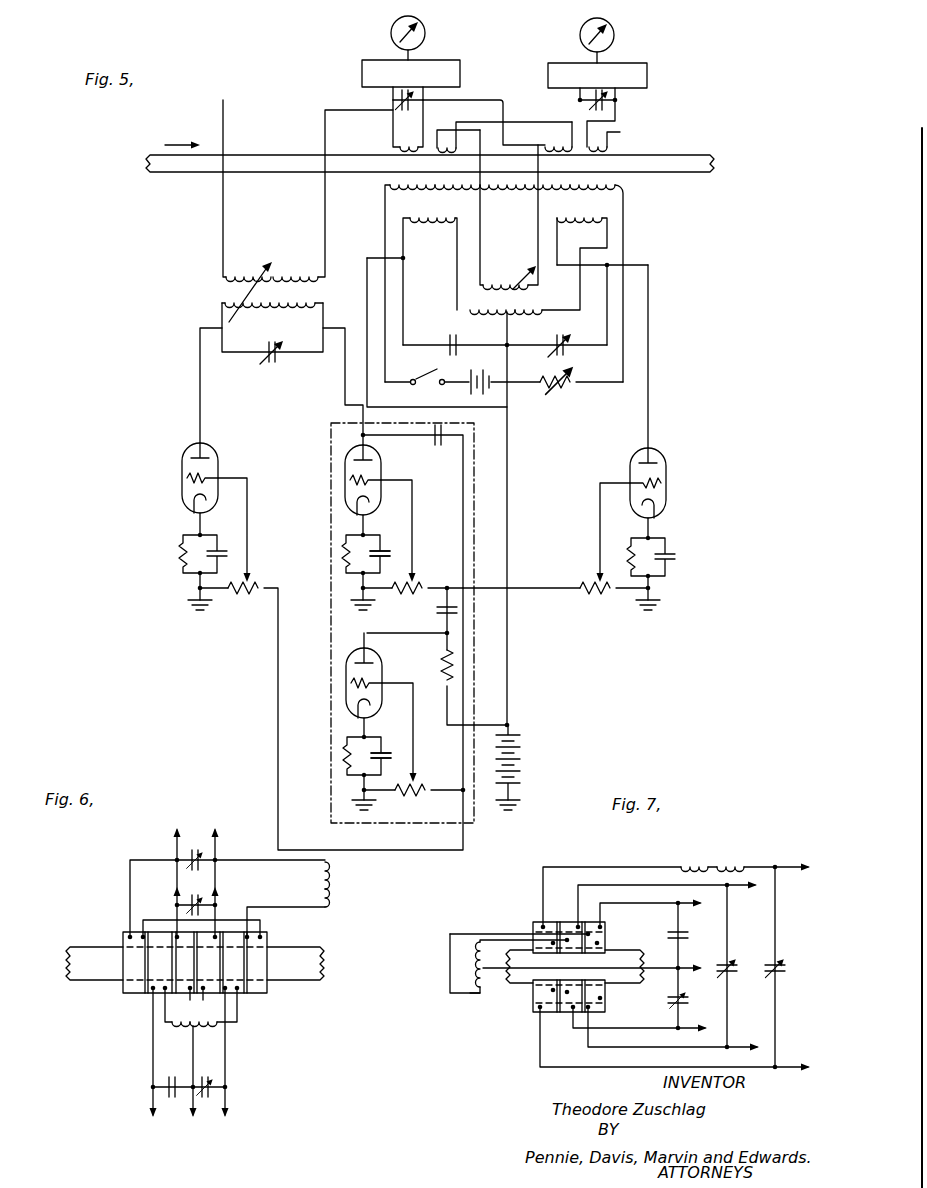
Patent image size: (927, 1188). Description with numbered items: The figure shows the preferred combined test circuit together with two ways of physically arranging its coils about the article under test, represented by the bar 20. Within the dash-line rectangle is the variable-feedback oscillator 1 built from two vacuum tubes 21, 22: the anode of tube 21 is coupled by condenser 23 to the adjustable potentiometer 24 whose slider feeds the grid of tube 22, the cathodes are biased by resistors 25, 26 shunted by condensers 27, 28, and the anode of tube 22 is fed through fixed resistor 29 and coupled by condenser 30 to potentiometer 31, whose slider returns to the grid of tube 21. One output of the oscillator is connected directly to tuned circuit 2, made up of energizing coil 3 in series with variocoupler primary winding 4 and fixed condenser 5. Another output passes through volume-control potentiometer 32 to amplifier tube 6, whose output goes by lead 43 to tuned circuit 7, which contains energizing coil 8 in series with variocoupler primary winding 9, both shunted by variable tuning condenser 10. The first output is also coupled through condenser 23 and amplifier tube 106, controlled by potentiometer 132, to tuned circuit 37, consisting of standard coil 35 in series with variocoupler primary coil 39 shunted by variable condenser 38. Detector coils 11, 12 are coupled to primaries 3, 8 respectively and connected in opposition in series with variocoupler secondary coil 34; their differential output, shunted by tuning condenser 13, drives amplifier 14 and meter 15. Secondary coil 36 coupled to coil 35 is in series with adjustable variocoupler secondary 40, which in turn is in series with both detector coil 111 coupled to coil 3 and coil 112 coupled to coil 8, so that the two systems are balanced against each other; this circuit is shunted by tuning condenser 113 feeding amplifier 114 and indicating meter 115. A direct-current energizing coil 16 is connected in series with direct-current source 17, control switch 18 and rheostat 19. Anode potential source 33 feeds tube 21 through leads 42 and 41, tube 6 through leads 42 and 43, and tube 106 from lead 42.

In FIG. 5, the oscillator 1 is at (475, 526).
In FIG. 5, the tuned circuit 2 is at (398, 300).
In FIG. 5, the alternating-current energizing coil 3 is at (421, 221).
In FIG. 6, the alternating-current energizing coil 3 is at (159, 971).
In FIG. 7, the alternating-current energizing coil 3 is at (575, 926).
In FIG. 5, the variocoupler primary winding 4 is at (492, 325).
In FIG. 6, the variocoupler primary winding 4 is at (177, 1030).
In FIG. 7, the variocoupler primary winding 4 is at (455, 933).
In FIG. 5, the fixed condenser 5 is at (505, 336).
In FIG. 6, the fixed condenser 5 is at (170, 1100).
In FIG. 7, the fixed condenser 5 is at (685, 935).
In FIG. 5, the amplifier tube 6 is at (667, 464).
In FIG. 5, the tuned circuit 7 is at (595, 286).
In FIG. 5, the energizing coil 8 is at (574, 221).
In FIG. 6, the energizing coil 8 is at (231, 971).
In FIG. 7, the energizing coil 8 is at (572, 1011).
In FIG. 5, the variocoupler primary winding 9 is at (528, 325).
In FIG. 6, the variocoupler primary winding 9 is at (206, 1030).
In FIG. 7, the variocoupler primary winding 9 is at (468, 993).
In FIG. 5, the variable tuning condenser 10 is at (566, 339).
In FIG. 6, the variable tuning condenser 10 is at (210, 1105).
In FIG. 7, the variable tuning condenser 10 is at (692, 999).
In FIG. 5, the detector coil 11 is at (504, 148).
In FIG. 6, the detector coil 11 is at (188, 976).
In FIG. 7, the detector coil 11 is at (598, 942).
In FIG. 5, the auxiliary detector coil 12 is at (620, 132).
In FIG. 6, the auxiliary detector coil 12 is at (212, 976).
In FIG. 7, the auxiliary detector coil 12 is at (601, 1000).
In FIG. 5, the tuning condenser 13 is at (617, 101).
In FIG. 6, the tuning condenser 13 is at (193, 895).
In FIG. 7, the tuning condenser 13 is at (673, 968).
In FIG. 5, the amplifier 14 is at (648, 68).
In FIG. 5, the meter 15 is at (615, 37).
In FIG. 5, the direct-current energizing coil 16 is at (504, 283).
In FIG. 5, the source of direct current 17 is at (505, 373).
In FIG. 5, the control switch 18 is at (427, 371).
In FIG. 5, the rheostat 19 is at (581, 390).
In FIG. 5, the bar 20 is at (180, 157).
In FIG. 6, the bar 20 is at (90, 970).
In FIG. 7, the bar 20 is at (520, 975).
In FIG. 5, the vacuum tube 21 is at (382, 479).
In FIG. 5, the vacuum tube 22 is at (380, 690).
In FIG. 5, the condenser 23 is at (413, 506).
In FIG. 5, the adjustable potentiometer 24 is at (416, 791).
In FIG. 5, the resistor 25 is at (343, 557).
In FIG. 5, the resistor 26 is at (340, 758).
In FIG. 5, the condenser 27 is at (381, 553).
In FIG. 5, the condenser 28 is at (379, 751).
In FIG. 5, the fixed resistor 29 is at (445, 660).
In FIG. 5, the coupling condenser 30 is at (437, 614).
In FIG. 5, the potentiometer 31 is at (406, 575).
In FIG. 5, the volume control potentiometer 32 is at (547, 599).
In FIG. 5, the anode potential supply 33 is at (524, 754).
In FIG. 5, the variocoupler secondary coil 34 is at (509, 210).
In FIG. 6, the variocoupler secondary coil 34 is at (212, 999).
In FIG. 7, the variocoupler secondary coil 34 is at (479, 947).
In FIG. 5, the primary energizing coil 35 is at (296, 325).
In FIG. 5, the secondary coil 36 is at (298, 273).
In FIG. 6, the secondary coil 36 is at (330, 903).
In FIG. 7, the secondary coil 36 is at (681, 862).
In FIG. 5, the tuned circuit 37 is at (272, 327).
In FIG. 5, the variable condenser 38 is at (270, 367).
In FIG. 5, the variocoupler primary coil 39 is at (246, 325).
In FIG. 5, the adjustable variocoupler secondary 40 is at (238, 273).
In FIG. 6, the adjustable variocoupler secondary 40 is at (330, 870).
In FIG. 7, the adjustable variocoupler secondary 40 is at (737, 862).
In FIG. 5, the lead 41 is at (364, 268).
In FIG. 6, the lead 41 is at (150, 1106).
In FIG. 7, the lead 41 is at (667, 905).
In FIG. 5, the lead 42 is at (511, 452).
In FIG. 6, the lead 42 is at (191, 1110).
In FIG. 7, the lead 42 is at (596, 936).
In FIG. 5, the lead 43 is at (655, 303).
In FIG. 6, the lead 43 is at (230, 1104).
In FIG. 7, the lead 43 is at (640, 1027).
In FIG. 5, the amplifier tube 106 is at (221, 461).
In FIG. 5, the detector coil 111 is at (393, 145).
In FIG. 6, the detector coil 111 is at (265, 940).
In FIG. 7, the detector coil 111 is at (541, 928).
In FIG. 5, the coil 112 is at (502, 138).
In FIG. 6, the coil 112 is at (128, 938).
In FIG. 7, the coil 112 is at (539, 1006).
In FIG. 5, the tuning condenser 113 is at (392, 99).
In FIG. 6, the tuning condenser 113 is at (197, 845).
In FIG. 7, the tuning condenser 113 is at (677, 969).
In FIG. 5, the amplifier 114 is at (362, 63).
In FIG. 5, the indicating meter 115 is at (425, 22).
In FIG. 5, the potentiometer 132 is at (262, 578).